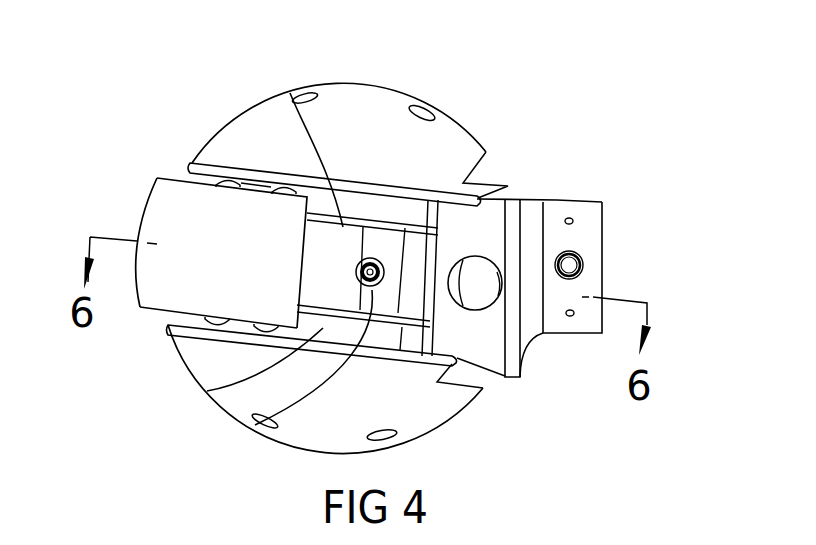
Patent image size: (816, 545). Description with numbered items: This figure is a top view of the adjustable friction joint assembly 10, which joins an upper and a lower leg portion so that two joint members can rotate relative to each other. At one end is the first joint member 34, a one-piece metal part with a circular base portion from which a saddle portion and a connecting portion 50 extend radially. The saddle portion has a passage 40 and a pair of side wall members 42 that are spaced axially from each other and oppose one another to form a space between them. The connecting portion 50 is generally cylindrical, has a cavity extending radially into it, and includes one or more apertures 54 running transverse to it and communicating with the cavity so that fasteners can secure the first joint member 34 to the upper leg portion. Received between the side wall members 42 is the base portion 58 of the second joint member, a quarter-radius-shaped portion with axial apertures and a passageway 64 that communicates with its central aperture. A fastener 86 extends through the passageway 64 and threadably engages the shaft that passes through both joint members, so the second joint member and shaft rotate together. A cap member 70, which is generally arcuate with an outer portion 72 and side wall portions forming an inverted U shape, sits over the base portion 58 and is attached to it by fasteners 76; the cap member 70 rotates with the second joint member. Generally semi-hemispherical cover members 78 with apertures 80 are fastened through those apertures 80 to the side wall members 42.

The adjustable friction joint assembly 10 is at (641, 206).
The first joint member 34 is at (560, 194).
The passage 40 is at (490, 357).
The side wall members 42 is at (418, 186).
The connecting portion 50 is at (553, 323).
The apertures 54 is at (583, 262).
The base portion 58 is at (291, 96).
The passageway 64 is at (388, 260).
The cap member 70 is at (141, 220).
The outer portion 72 is at (178, 288).
The fasteners 76 is at (283, 180).
The cover members 78 is at (387, 110).
The apertures 80 is at (435, 112).
The fastener 86 is at (251, 421).